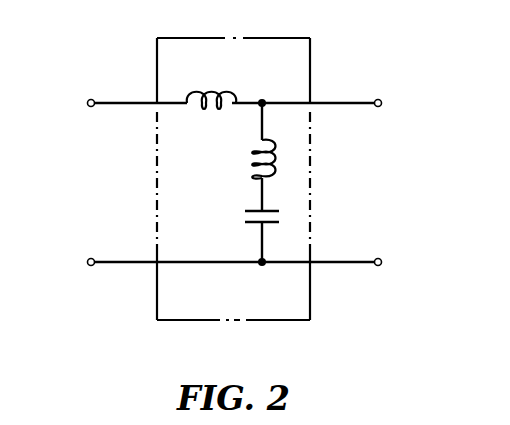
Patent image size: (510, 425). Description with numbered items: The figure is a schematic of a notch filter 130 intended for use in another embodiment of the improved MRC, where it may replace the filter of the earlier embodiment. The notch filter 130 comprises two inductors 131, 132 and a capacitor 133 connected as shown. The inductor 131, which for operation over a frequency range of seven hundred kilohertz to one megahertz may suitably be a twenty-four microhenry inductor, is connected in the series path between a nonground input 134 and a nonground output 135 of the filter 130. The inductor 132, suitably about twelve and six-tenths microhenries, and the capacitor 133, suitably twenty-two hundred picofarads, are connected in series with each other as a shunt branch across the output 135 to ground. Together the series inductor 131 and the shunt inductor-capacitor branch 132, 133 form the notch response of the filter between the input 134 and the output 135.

The notch filter 130 is at (267, 38).
The inductor 131 is at (208, 91).
The inductor 132 is at (248, 157).
The capacitor 133 is at (250, 210).
The nonground input 134 is at (91, 99).
The nonground output 135 is at (377, 99).